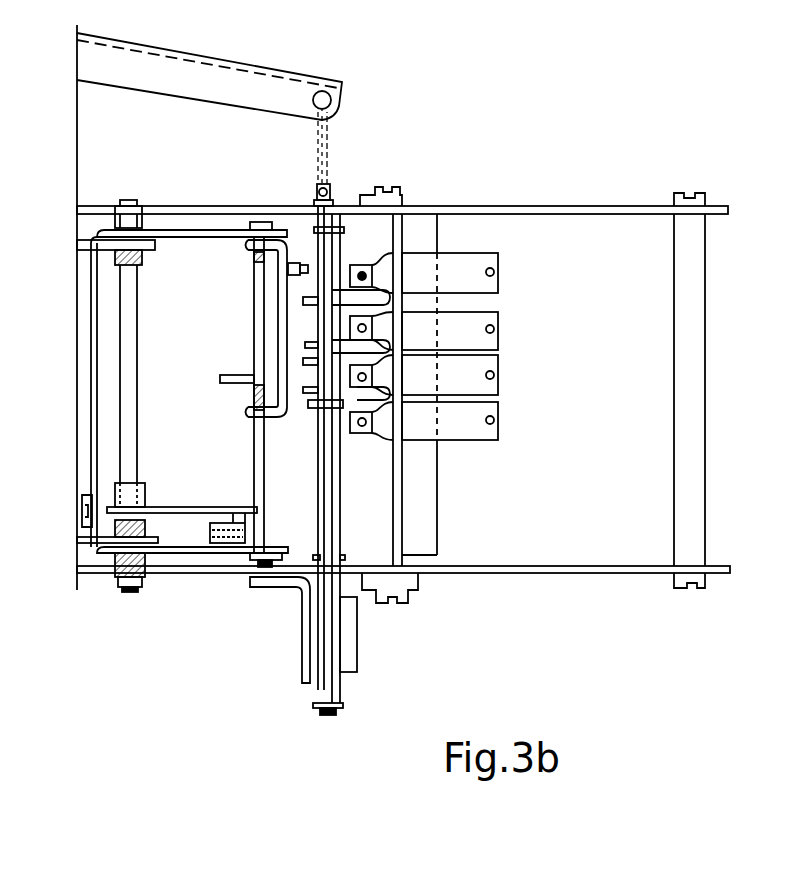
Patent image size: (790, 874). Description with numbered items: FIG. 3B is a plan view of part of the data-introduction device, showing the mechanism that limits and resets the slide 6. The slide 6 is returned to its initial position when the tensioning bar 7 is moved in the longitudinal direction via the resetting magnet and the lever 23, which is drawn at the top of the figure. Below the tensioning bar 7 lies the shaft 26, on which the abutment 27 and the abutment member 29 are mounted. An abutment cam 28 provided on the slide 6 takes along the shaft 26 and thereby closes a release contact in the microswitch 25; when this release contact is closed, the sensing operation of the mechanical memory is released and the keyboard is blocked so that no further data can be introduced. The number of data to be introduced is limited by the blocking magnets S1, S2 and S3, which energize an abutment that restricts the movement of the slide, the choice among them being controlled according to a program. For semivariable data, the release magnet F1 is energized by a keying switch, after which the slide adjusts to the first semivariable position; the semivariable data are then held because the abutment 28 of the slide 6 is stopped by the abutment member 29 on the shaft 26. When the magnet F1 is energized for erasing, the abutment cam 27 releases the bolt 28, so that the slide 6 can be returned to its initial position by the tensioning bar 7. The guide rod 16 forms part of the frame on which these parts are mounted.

The lever 23 is at (207, 75).
The abutment cam 28 is at (298, 262).
The abutment member 29 is at (363, 300).
The guide rod 16 is at (95, 333).
The slide 6 is at (283, 308).
The abutment 27 is at (310, 345).
The shaft 26 is at (335, 525).
The microswitch 25 is at (348, 657).
The tensioning bar 7 is at (328, 692).
The release magnet F1 is at (492, 288).
The blocking magnet S1 is at (492, 340).
The blocking magnet S2 is at (492, 385).
The blocking magnet S3 is at (492, 432).